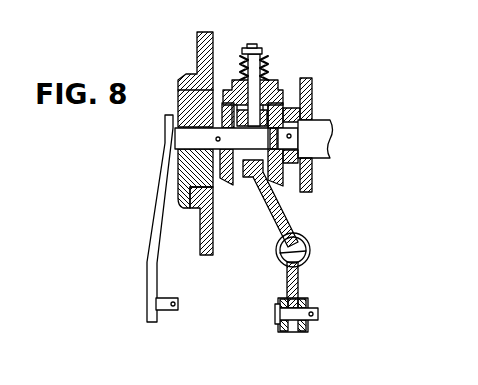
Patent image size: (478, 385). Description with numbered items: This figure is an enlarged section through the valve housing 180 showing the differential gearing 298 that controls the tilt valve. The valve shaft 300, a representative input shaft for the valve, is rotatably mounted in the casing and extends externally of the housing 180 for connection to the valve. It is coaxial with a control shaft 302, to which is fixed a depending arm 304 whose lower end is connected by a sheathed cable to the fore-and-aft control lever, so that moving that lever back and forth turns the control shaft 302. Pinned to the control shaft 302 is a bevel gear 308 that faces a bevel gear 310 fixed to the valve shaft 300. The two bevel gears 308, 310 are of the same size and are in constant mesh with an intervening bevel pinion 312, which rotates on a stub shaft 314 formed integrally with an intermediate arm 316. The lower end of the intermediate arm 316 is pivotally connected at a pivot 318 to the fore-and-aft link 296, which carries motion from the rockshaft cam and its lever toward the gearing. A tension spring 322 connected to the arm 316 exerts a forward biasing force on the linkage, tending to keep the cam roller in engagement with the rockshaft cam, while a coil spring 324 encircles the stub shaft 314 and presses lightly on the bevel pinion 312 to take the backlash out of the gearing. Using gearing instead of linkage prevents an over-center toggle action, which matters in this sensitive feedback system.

The valve housing 180 is at (203, 32).
The link 296 is at (280, 333).
The differential gearing 298 is at (312, 65).
The valve shaft 300 is at (328, 125).
The control shaft 302 is at (181, 133).
The depending arm 304 is at (158, 202).
The bevel gear 308 is at (229, 185).
The bevel gear 310 is at (294, 192).
The bevel pinion 312 is at (268, 80).
The stub shaft 314 is at (252, 47).
The intermediate arm 316 is at (298, 278).
The pivotal connection 318 is at (318, 316).
The tension spring 322 is at (310, 243).
The coil spring 324 is at (266, 60).